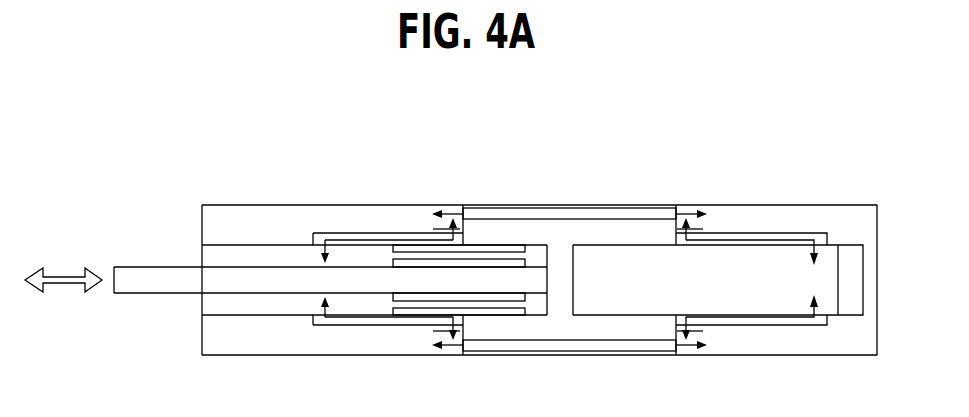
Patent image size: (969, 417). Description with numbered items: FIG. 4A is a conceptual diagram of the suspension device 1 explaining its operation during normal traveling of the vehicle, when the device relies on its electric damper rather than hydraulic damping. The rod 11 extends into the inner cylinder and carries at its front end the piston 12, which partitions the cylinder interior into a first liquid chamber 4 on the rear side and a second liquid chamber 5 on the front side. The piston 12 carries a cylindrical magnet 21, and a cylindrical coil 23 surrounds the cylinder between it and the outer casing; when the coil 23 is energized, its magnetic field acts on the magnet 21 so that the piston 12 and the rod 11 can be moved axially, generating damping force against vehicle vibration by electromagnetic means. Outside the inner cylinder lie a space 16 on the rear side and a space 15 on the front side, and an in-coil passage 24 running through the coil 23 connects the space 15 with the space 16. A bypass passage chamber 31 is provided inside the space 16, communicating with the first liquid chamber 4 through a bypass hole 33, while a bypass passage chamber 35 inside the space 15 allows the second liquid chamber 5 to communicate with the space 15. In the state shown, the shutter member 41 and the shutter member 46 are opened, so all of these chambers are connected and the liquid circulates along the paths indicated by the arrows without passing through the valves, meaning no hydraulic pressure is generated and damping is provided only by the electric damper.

The suspension device 1 is at (799, 138).
The first liquid chamber 4 is at (258, 307).
The second liquid chamber 5 is at (763, 293).
The rod 11 is at (155, 275).
The piston 12 is at (573, 260).
The space 15 is at (793, 217).
The space 16 is at (310, 216).
The magnet 21 is at (410, 247).
The coil 23 is at (520, 232).
The in-coil passage 24 is at (635, 213).
The bypass passage chamber 31 is at (357, 237).
The bypass hole 33 is at (323, 252).
The bypass passage chamber 35 is at (745, 232).
The shutter member 41 is at (447, 232).
The shutter member 46 is at (690, 220).